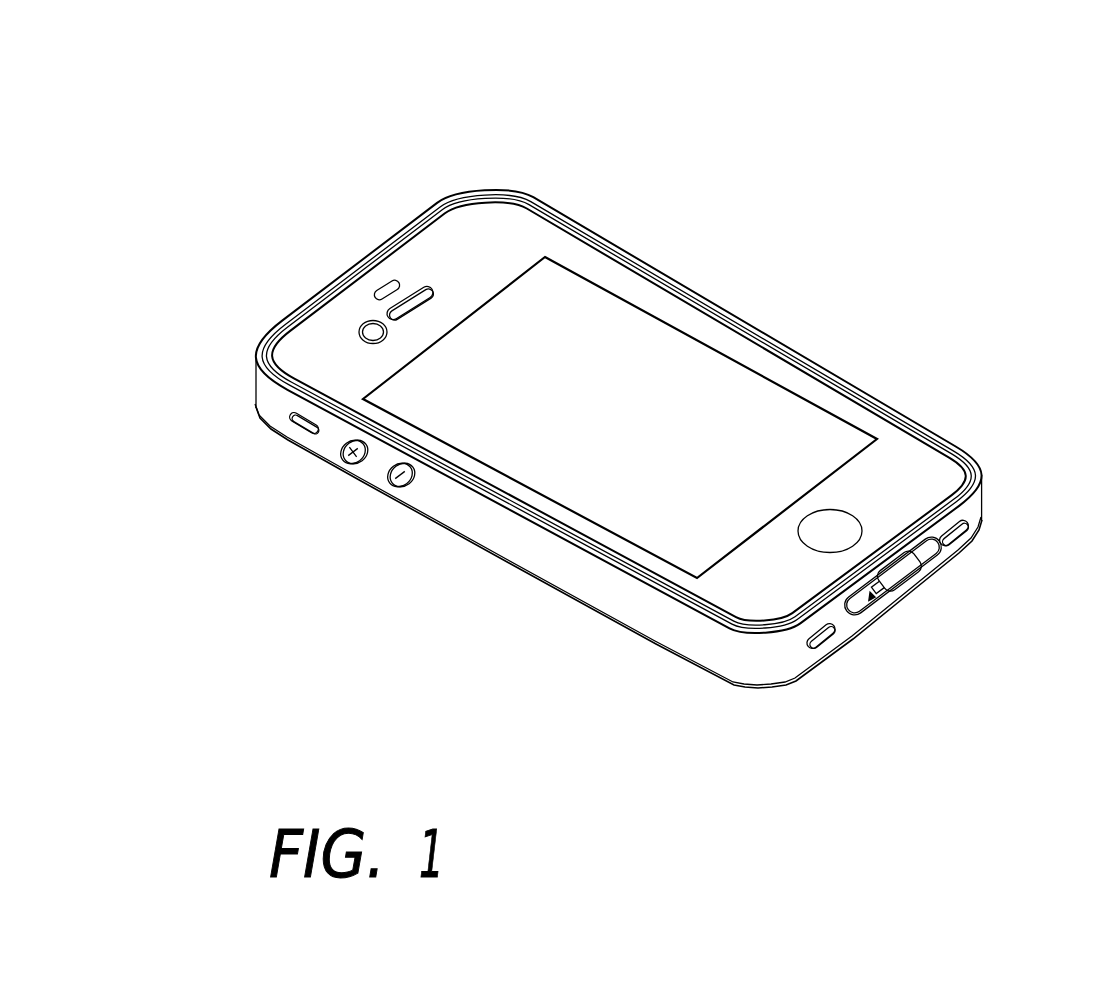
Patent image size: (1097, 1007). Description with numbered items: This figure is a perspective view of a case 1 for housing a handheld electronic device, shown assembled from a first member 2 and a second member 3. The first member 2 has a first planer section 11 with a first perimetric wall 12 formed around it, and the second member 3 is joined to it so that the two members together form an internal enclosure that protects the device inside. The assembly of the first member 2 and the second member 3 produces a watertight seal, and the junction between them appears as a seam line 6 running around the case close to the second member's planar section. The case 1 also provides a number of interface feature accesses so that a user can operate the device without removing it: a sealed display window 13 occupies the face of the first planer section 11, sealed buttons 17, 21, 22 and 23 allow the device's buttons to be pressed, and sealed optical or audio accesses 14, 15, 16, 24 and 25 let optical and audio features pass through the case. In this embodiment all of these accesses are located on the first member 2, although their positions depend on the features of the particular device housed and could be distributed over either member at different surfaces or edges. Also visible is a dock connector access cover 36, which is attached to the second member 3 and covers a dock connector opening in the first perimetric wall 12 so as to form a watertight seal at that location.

The case 1 is at (747, 184).
The first member 2 is at (483, 186).
The second member 3 is at (512, 572).
The seam line 6 is at (636, 638).
The first planer section 11 is at (513, 255).
The first perimetric wall 12 is at (724, 656).
The sealed display window 13 is at (785, 425).
The sealed optical or audio access 14 is at (422, 283).
The sealed optical or audio access 15 is at (388, 283).
The sealed optical or audio access 16 is at (370, 322).
The sealed button 17 is at (837, 520).
The sealed button 21 is at (297, 427).
The sealed button 22 is at (353, 465).
The sealed button 23 is at (400, 487).
The sealed optical or audio access 24 is at (830, 643).
The sealed optical or audio access 25 is at (962, 535).
The dock connector access cover 36 is at (892, 603).